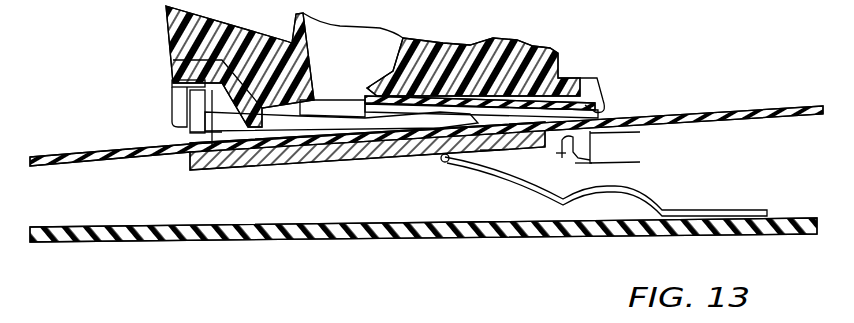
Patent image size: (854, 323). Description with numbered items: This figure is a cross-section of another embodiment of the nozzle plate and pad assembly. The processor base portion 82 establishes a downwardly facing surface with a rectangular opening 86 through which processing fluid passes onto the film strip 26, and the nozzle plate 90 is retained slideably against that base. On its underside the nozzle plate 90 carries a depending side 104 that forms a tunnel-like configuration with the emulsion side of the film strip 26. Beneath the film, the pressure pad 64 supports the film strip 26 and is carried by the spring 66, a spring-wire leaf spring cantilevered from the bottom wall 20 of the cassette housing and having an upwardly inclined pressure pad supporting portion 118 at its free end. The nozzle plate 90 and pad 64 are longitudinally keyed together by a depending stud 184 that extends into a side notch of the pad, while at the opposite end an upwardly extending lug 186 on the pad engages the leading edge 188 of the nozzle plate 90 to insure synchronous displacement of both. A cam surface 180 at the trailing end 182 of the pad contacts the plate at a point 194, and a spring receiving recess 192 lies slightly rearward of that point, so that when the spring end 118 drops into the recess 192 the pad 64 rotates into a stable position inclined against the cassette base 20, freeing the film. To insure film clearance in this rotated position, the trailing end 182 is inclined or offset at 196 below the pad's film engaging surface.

The bottom wall 20 is at (445, 234).
The film strip 26 is at (776, 113).
The pressure pad 64 is at (289, 167).
The spring 66 is at (640, 200).
The base portion 82 is at (447, 48).
The rectangular opening 86 is at (339, 100).
The nozzle plate 90 is at (407, 130).
The depending side 104 is at (190, 132).
The pressure pad supporting portion 118 is at (443, 162).
The cam surface 180 is at (592, 163).
The trailing end 182 is at (592, 143).
The depending stud 184 is at (486, 153).
The upwardly extending lug 186 is at (187, 100).
The leading edge 188 is at (173, 78).
The spring receiving recess 192 is at (565, 155).
The point of contact 194 is at (587, 76).
The inclined offset 196 is at (540, 138).